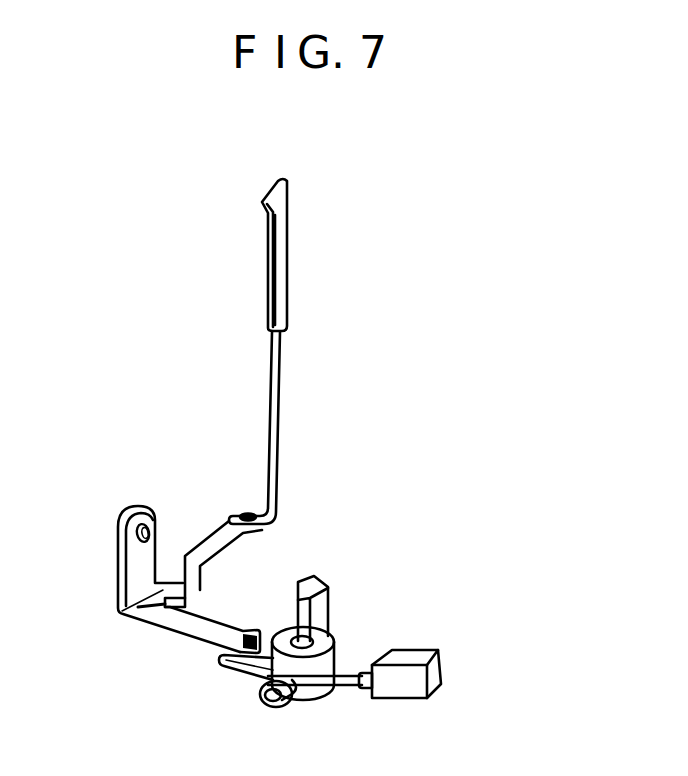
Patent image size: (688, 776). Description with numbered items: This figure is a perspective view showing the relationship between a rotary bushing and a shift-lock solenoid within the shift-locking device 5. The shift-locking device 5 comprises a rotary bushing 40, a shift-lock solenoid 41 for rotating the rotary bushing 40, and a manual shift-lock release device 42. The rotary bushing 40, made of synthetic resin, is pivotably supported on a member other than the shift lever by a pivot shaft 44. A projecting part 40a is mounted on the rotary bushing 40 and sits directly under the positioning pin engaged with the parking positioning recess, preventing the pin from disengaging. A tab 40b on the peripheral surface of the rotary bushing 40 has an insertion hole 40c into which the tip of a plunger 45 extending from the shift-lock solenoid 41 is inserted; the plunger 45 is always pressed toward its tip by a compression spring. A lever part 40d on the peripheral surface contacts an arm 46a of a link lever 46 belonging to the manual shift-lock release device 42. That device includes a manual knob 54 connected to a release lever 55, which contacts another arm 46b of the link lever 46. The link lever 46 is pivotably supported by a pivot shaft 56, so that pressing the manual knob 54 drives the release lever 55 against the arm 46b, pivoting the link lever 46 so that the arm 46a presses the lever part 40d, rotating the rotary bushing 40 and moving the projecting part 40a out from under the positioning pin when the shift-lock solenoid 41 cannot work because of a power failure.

The shift-locking device 5 is at (418, 475).
The manual shift-lock release device 42 is at (290, 298).
The manual knob 54 is at (272, 255).
The release lever 55 is at (283, 413).
The link lever 46 is at (155, 626).
The pivot shaft 56 is at (152, 530).
The arm 46a is at (190, 630).
The arm 46b is at (221, 525).
The lever part 40d is at (223, 662).
The rotary bushing 40 is at (330, 600).
The pivot shaft 44 is at (298, 634).
The projecting part 40a is at (312, 578).
The plunger 45 is at (352, 687).
The insertion hole 40c is at (290, 712).
The tab 40b is at (262, 708).
The shift-lock solenoid 41 is at (408, 655).